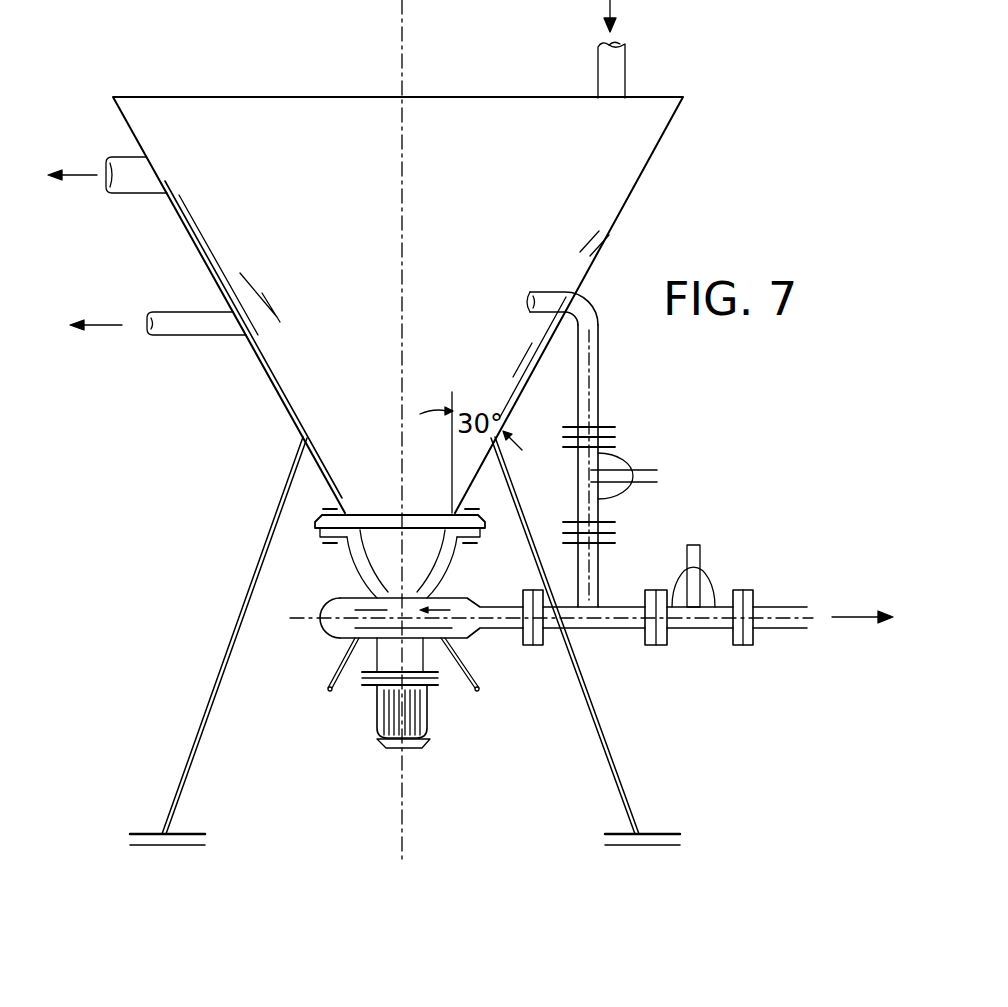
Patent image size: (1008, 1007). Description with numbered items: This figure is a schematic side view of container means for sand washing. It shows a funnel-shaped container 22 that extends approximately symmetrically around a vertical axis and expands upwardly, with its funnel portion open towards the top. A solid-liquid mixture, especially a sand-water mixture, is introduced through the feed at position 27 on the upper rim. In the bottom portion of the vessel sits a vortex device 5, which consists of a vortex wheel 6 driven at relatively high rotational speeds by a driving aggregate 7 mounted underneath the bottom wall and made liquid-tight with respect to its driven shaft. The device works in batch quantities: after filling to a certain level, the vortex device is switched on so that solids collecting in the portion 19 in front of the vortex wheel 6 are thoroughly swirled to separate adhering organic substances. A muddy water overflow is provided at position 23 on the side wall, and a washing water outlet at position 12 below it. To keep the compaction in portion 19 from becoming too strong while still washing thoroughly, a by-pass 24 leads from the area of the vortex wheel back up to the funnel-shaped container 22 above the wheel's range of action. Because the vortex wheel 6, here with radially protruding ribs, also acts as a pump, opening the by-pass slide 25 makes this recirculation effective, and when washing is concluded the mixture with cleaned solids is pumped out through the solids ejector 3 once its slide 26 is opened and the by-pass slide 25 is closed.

The solids ejector 3 is at (777, 623).
The vortex device 5 is at (297, 670).
The vortex wheel 6 is at (345, 598).
The driving aggregate 7 is at (383, 708).
The washing water outlet 12 is at (165, 325).
The region of the mixture 19 is at (403, 557).
The funnel-shaped container 22 is at (593, 203).
The muddy water overflow 23 is at (133, 178).
The by-pass 24 is at (592, 373).
The by-pass slide 25 is at (612, 463).
The slide 26 is at (693, 560).
The introduction position 27 is at (612, 63).